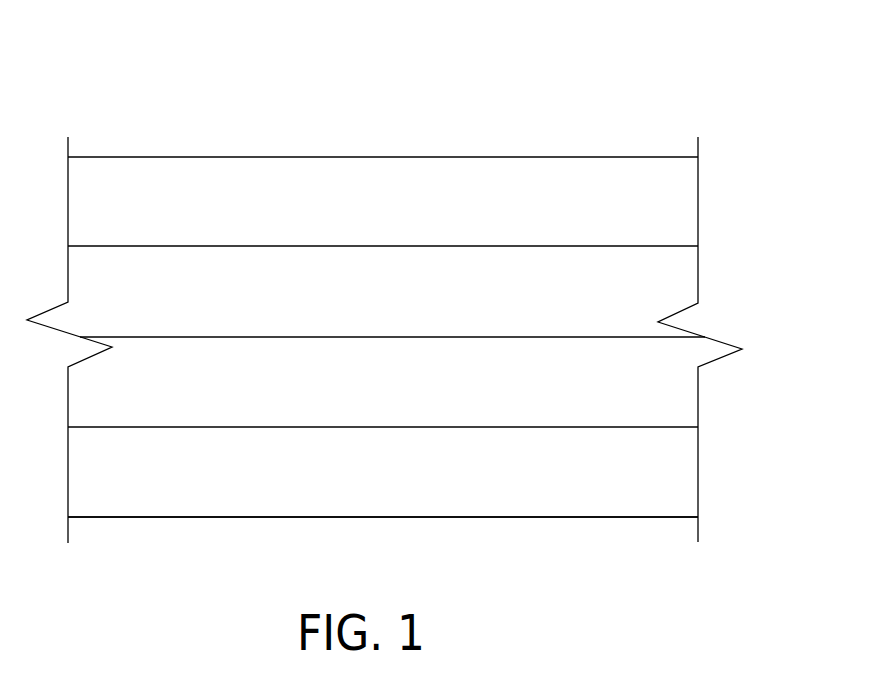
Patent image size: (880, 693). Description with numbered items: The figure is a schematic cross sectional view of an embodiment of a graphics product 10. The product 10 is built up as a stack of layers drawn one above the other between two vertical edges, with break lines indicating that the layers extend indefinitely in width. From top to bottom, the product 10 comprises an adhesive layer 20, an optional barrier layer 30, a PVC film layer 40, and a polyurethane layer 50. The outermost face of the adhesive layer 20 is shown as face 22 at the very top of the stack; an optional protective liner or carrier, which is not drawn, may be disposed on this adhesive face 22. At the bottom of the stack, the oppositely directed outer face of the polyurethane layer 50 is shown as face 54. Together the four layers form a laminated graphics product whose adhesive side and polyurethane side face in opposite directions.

The graphics product 10 is at (113, 91).
The face 22 is at (588, 157).
The adhesive layer 20 is at (672, 198).
The barrier layer 30 is at (672, 283).
The PVC film layer 40 is at (672, 403).
The polyurethane layer 50 is at (672, 481).
The face 54 is at (613, 519).